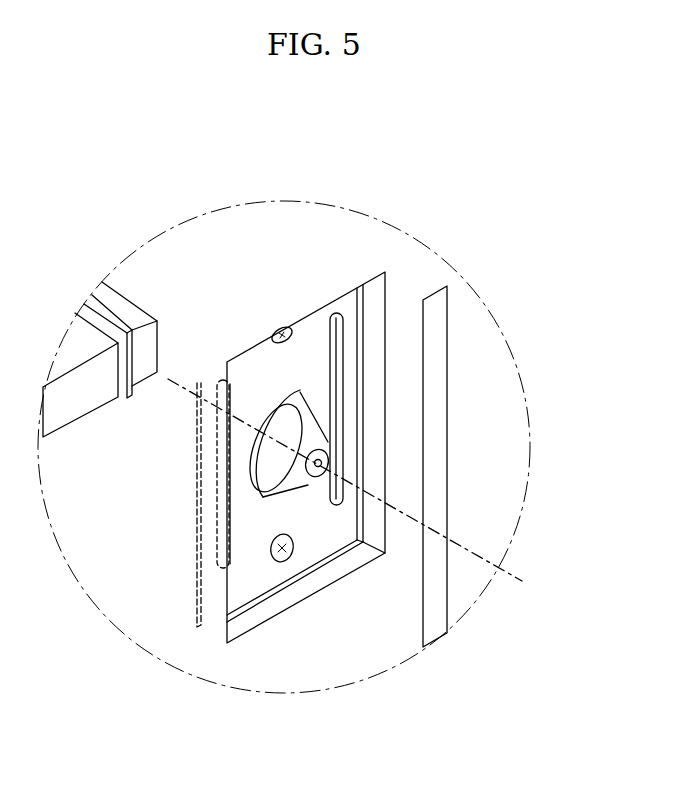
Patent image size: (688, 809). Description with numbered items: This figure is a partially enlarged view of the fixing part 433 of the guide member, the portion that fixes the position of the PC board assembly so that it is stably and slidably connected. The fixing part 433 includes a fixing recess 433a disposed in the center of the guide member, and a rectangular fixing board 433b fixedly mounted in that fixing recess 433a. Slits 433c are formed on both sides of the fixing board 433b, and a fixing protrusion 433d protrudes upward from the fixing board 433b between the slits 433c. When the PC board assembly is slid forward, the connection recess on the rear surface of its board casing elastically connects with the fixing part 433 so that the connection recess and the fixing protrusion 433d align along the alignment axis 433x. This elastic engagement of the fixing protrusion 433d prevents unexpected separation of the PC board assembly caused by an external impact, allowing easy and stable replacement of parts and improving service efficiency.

The fixing part 433 is at (405, 500).
The fixing recess 433a is at (283, 597).
The fixing board 433b is at (305, 342).
The slits 433c is at (341, 397).
The fixing protrusion 433d is at (321, 461).
The alignment axis 433x is at (369, 489).